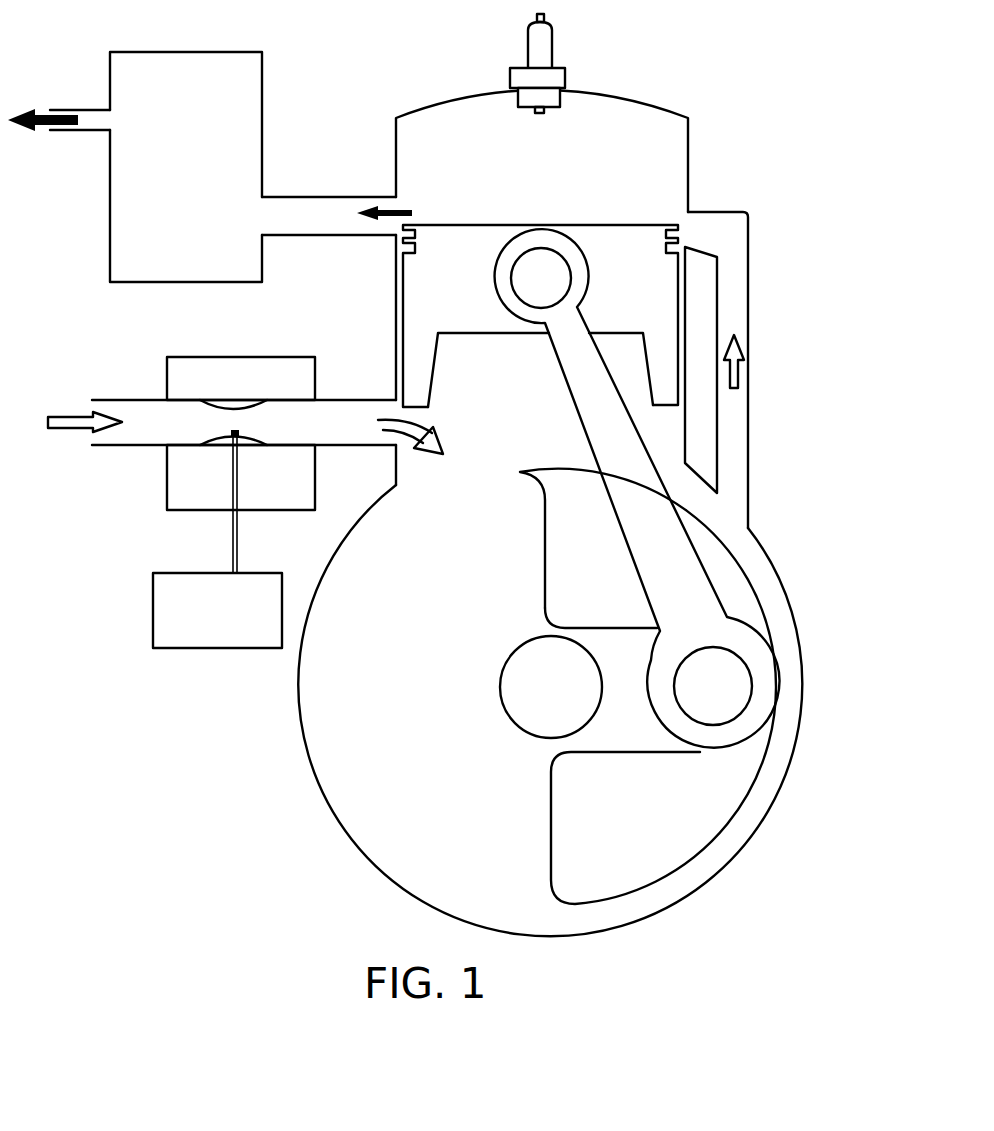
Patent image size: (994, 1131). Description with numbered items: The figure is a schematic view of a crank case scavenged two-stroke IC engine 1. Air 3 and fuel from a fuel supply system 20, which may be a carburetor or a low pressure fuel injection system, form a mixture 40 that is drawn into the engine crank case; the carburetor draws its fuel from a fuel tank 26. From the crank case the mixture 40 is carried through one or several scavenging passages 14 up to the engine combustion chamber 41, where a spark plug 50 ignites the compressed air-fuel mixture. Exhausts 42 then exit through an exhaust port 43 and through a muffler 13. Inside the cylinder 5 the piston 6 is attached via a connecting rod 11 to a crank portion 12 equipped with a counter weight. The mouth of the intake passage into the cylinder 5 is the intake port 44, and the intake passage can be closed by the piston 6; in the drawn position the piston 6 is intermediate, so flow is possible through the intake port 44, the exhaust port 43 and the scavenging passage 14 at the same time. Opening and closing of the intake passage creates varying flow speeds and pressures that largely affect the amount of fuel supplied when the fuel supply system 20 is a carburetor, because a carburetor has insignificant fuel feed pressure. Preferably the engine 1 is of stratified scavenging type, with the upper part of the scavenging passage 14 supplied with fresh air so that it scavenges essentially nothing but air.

The two-stroke IC engine 1 is at (650, 76).
The air 3 is at (60, 421).
The cylinder 5 is at (627, 348).
The piston 6 is at (458, 301).
The connecting rod 11 is at (676, 591).
The crank portion 12 is at (416, 718).
The muffler 13 is at (184, 164).
The scavenging passage 14 is at (735, 310).
The fuel supply system 20 is at (182, 507).
The fuel tank 26 is at (205, 633).
The mixture 40 is at (768, 365).
The combustion chamber 41 is at (528, 153).
The exhausts 42 is at (403, 205).
The exhaust port 43 is at (347, 212).
The intake port 44 is at (350, 410).
The spark plug 50 is at (543, 70).